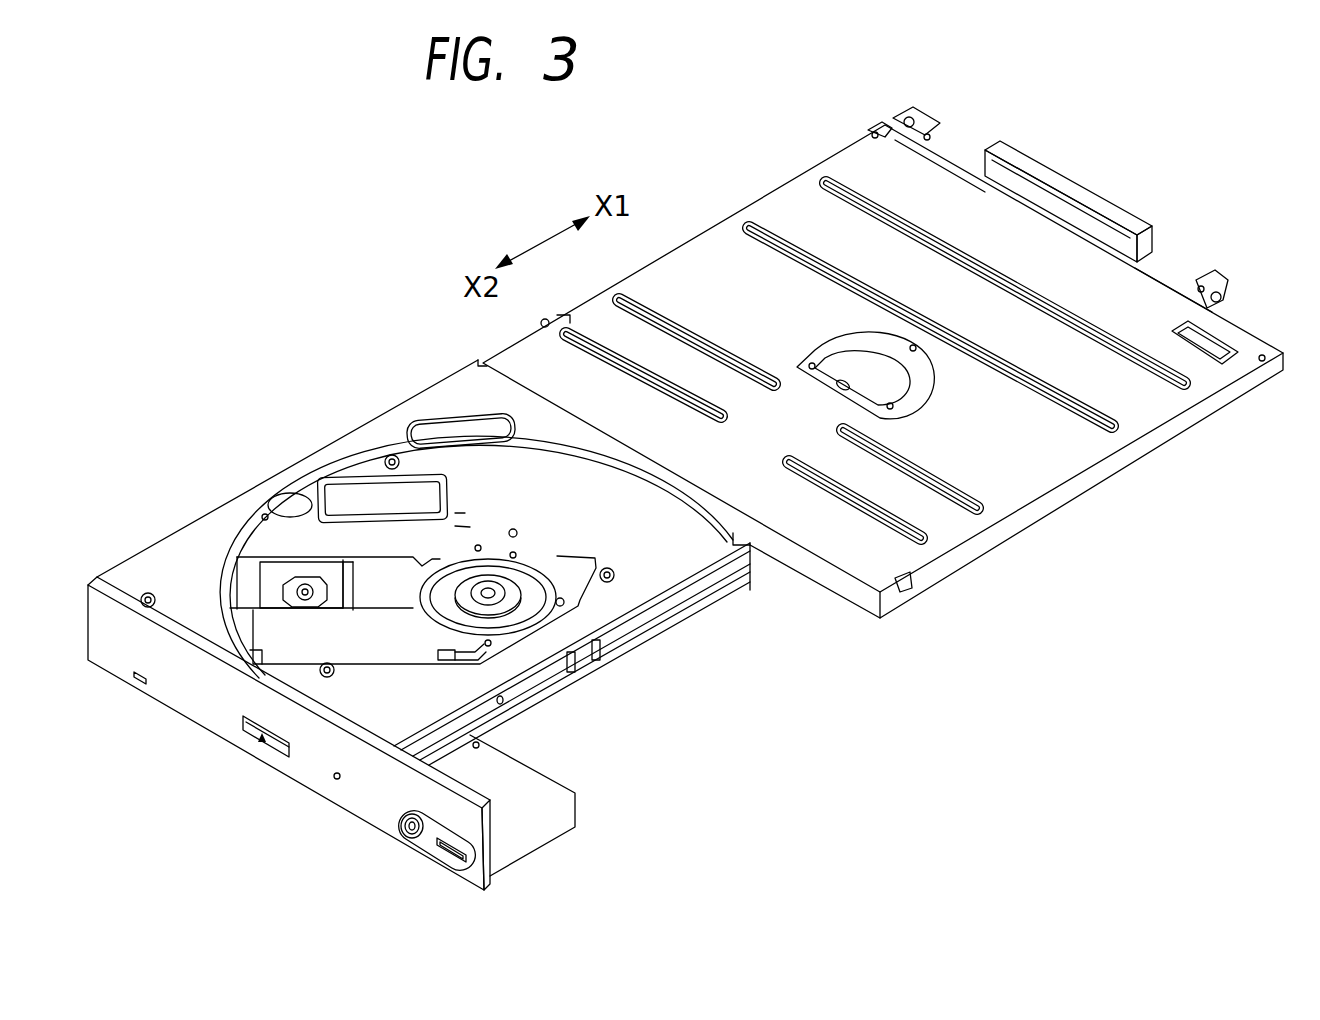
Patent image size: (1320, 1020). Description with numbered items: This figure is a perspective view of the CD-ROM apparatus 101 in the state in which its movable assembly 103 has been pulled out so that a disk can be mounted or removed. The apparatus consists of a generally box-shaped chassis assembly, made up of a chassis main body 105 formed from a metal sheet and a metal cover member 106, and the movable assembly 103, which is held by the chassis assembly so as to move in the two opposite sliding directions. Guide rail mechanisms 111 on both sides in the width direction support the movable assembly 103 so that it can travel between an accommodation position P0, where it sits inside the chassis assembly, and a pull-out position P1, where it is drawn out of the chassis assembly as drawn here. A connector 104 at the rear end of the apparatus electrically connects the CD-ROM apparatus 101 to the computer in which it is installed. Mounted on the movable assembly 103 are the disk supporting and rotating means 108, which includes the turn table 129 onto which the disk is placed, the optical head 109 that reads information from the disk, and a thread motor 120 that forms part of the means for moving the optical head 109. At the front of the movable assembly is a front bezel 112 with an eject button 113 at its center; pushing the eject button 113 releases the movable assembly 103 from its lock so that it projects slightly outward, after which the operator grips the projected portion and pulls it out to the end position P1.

The CD-ROM apparatus 101 is at (388, 214).
The movable assembly 103 is at (172, 537).
The connector 104 is at (1104, 200).
The chassis main body 105 is at (1085, 487).
The cover member 106 is at (1101, 453).
The disk supporting and rotating means 108 is at (490, 566).
The optical head 109 is at (287, 603).
The guide rail mechanism 111 is at (652, 634).
The front bezel 112 is at (300, 777).
The eject button 113 is at (246, 733).
The thread motor 120 is at (358, 497).
The turn table 129 is at (525, 580).
The accommodation position P0 is at (905, 613).
The pull-out position P1 is at (503, 822).